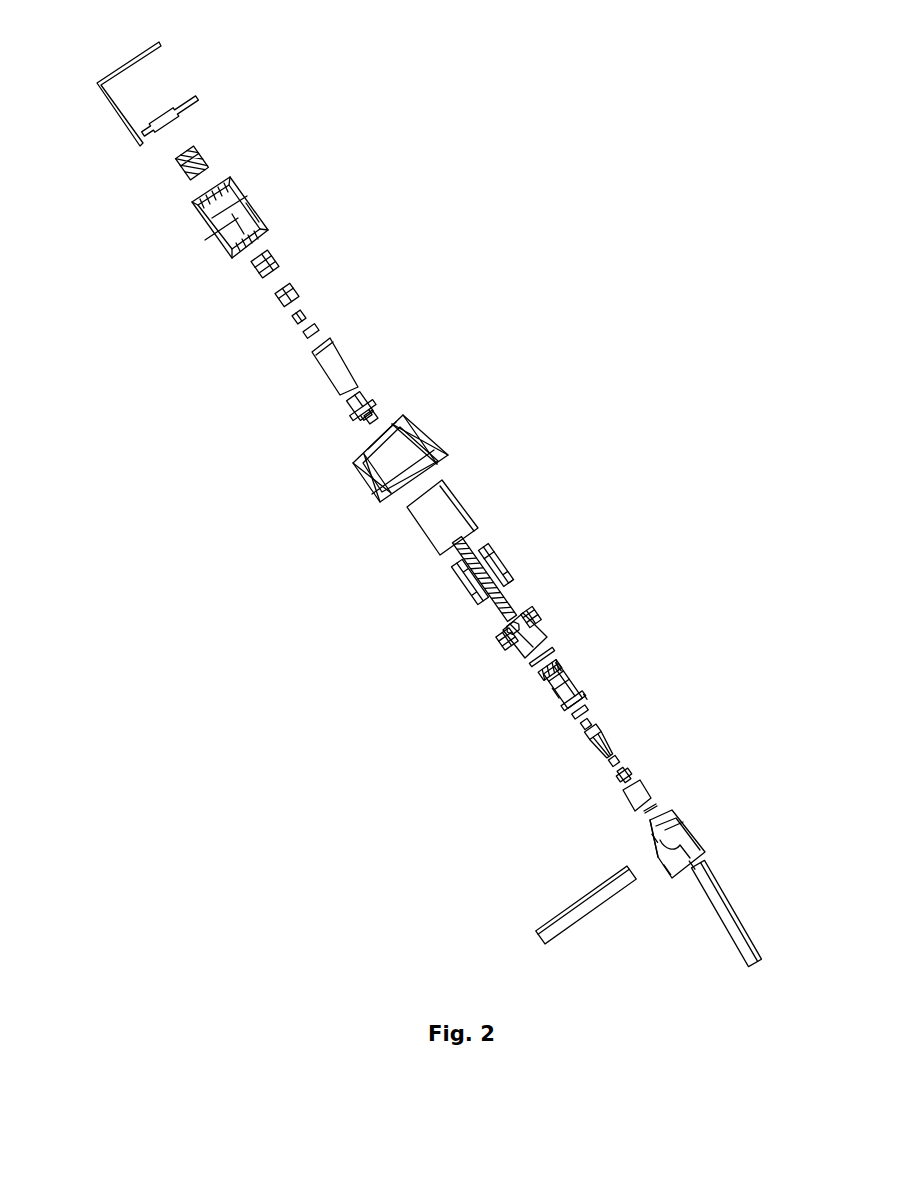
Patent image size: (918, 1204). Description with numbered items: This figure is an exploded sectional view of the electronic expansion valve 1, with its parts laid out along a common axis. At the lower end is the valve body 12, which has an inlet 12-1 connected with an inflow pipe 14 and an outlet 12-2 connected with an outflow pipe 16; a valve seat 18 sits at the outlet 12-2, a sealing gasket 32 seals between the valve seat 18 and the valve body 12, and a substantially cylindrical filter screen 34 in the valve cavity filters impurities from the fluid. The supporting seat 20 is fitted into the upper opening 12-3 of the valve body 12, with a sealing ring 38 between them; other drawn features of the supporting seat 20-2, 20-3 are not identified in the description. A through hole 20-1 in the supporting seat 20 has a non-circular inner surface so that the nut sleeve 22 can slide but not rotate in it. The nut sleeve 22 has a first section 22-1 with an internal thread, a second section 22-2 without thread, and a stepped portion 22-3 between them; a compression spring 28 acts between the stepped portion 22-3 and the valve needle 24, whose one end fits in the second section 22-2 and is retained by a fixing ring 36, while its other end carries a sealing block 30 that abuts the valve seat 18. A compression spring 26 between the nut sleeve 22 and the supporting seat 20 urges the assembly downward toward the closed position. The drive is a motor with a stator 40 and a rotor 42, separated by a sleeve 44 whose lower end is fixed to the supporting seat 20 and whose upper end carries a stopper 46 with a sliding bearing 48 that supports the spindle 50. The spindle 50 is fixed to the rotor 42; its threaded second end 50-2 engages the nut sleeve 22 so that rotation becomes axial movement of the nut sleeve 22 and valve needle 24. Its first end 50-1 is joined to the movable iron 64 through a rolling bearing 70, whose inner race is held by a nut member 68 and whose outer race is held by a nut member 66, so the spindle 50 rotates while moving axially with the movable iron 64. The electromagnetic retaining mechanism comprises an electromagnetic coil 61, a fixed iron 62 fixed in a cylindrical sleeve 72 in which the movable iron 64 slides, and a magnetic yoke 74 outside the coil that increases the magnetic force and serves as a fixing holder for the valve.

The electronic expansion valve 1 is at (300, 830).
The valve body 12 is at (658, 884).
The inlet 12-1 is at (663, 877).
The outlet 12-2 is at (688, 877).
The upper opening 12-3 is at (655, 831).
The inflow pipe 14 is at (545, 928).
The outflow pipe 16 is at (704, 871).
The valve seat 18 is at (633, 777).
The supporting seat 20 is at (447, 624).
The through hole 20-1 is at (505, 627).
The valve body second nut 20-2 is at (500, 637).
The valve body ring 20-3 is at (507, 630).
The nut sleeve 22 is at (477, 701).
The first section 22-1 is at (545, 680).
The second section 22-2 is at (556, 700).
The stepped portion 22-3 is at (562, 690).
The valve needle 24 is at (603, 735).
The compression spring 26 is at (557, 662).
The compression spring 28 is at (585, 710).
The sealing block 30 is at (612, 762).
The sealing gasket 32 is at (640, 810).
The filter screen 34 is at (625, 800).
The fixing ring 36 is at (583, 724).
The sealing ring 38 is at (553, 650).
The stator 40 is at (440, 445).
The rotor 42 is at (488, 563).
The sleeve 44 is at (463, 507).
The stopper 46 is at (380, 395).
The sliding bearing 48 is at (358, 420).
The spindle 50 is at (474, 557).
The first end of spindle 50-1 is at (458, 542).
The second end of spindle 50-2 is at (487, 603).
The electromagnetic coil 61 is at (248, 205).
The fixed iron 62 is at (200, 153).
The movable iron 64 is at (277, 258).
The nut member 66 is at (298, 293).
The nut member 68 is at (303, 310).
The rolling bearing 70 is at (320, 330).
The sleeve 72 is at (350, 362).
The magnetic yoke 74 is at (135, 66).